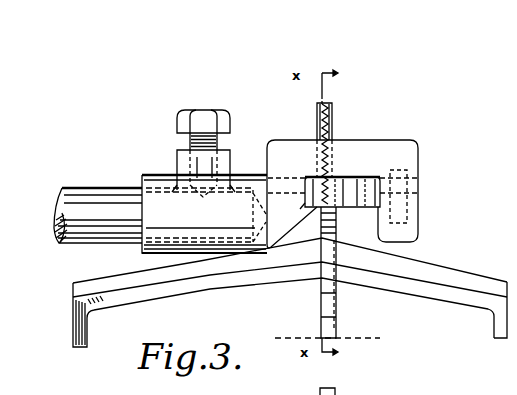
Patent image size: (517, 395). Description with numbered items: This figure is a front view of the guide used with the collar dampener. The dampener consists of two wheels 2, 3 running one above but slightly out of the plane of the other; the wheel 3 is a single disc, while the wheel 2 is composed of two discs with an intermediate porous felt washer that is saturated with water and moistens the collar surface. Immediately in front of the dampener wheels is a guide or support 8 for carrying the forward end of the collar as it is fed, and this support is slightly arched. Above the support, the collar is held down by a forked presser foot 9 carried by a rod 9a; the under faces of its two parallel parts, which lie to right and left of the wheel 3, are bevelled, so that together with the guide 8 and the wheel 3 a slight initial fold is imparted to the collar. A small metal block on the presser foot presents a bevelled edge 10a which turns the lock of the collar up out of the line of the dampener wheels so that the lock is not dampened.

The wheel 2 is at (317, 118).
The wheel 3 is at (321, 311).
The guide or support 8 is at (459, 296).
The forked presser foot 9 is at (407, 163).
The rod 9a is at (102, 192).
The bevelled edge 10a is at (369, 196).